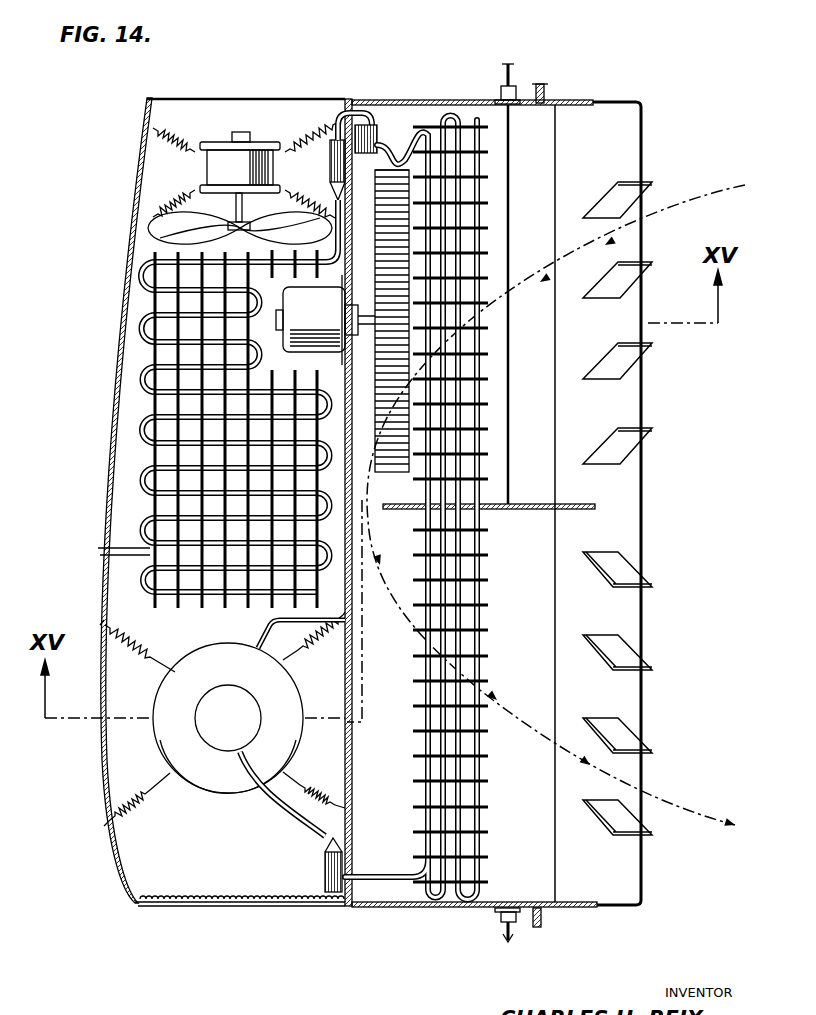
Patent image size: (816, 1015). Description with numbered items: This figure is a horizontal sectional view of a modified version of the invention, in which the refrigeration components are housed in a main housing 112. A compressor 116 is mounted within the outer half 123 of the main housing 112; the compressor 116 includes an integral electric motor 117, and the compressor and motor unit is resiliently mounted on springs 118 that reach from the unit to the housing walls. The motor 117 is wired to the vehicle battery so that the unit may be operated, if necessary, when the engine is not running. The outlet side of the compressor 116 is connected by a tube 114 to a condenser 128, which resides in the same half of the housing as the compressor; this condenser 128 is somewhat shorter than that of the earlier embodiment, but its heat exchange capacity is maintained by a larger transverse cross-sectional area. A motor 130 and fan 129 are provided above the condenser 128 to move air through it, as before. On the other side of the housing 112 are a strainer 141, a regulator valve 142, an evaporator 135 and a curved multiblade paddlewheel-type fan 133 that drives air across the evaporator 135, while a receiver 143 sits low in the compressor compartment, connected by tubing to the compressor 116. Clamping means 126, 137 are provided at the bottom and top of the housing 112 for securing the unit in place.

The main housing 112 is at (100, 495).
The tube 114 is at (265, 630).
The compressor 116 is at (207, 722).
The integral electric motor 117 is at (280, 698).
The springs 118 is at (140, 652).
The outer half of main housing 123 is at (221, 882).
The clamping means 126 is at (500, 927).
The condenser 128 is at (125, 429).
The fan 129 is at (170, 223).
The motor 130 is at (207, 171).
The curved multiblade paddlewheel-type fan 133 is at (388, 462).
The evaporator 135 is at (475, 604).
The clamping means 137 is at (507, 78).
The strainer 141 is at (330, 171).
The regulator valve 142 is at (373, 124).
The receiver 143 is at (323, 871).